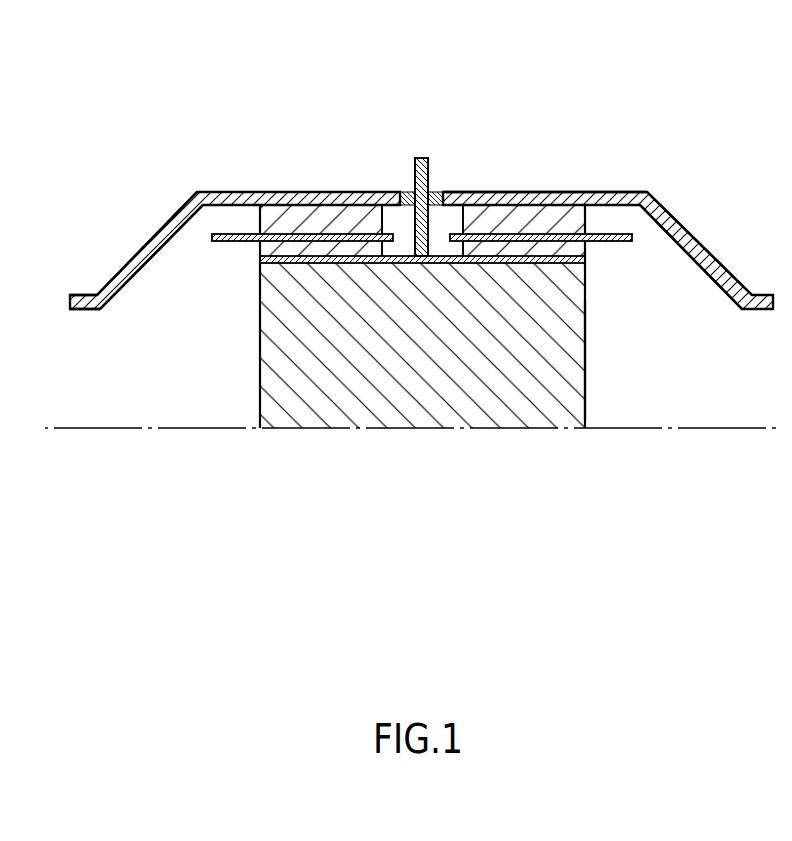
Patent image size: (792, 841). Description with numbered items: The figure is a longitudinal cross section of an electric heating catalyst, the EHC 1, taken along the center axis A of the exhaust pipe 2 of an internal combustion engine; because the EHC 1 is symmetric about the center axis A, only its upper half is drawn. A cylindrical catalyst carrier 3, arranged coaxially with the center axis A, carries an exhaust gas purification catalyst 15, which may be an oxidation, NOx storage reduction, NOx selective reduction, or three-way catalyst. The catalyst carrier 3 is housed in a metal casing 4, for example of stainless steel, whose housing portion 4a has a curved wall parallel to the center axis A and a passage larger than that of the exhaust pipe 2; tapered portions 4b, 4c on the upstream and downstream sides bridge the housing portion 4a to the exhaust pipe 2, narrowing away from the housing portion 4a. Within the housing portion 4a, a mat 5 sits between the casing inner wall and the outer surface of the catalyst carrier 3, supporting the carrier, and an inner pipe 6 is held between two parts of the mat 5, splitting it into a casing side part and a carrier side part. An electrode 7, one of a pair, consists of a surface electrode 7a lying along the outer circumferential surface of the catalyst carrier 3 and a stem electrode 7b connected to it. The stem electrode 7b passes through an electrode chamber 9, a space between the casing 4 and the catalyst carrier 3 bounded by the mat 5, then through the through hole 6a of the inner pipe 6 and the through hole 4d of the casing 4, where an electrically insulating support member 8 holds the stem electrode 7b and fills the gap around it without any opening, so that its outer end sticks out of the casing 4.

The electric heating catalyst 1 is at (677, 98).
The exhaust pipe 2 is at (78, 294).
The catalyst carrier 3 is at (258, 360).
The casing 4 is at (282, 190).
The housing portion 4a is at (567, 192).
The tapered portion 4b is at (148, 238).
The tapered portion 4c is at (698, 240).
The through hole 4d is at (405, 192).
The mat 5 is at (572, 222).
The inner pipe 6 is at (245, 242).
The through hole 6a is at (473, 217).
The electrode 7 is at (427, 155).
The surface electrode 7a is at (297, 257).
The stem electrode 7b is at (437, 190).
The support member 8 is at (436, 188).
The electrode chamber 9 is at (392, 192).
The exhaust gas purification catalyst 15 is at (568, 362).
The center axis A is at (697, 425).